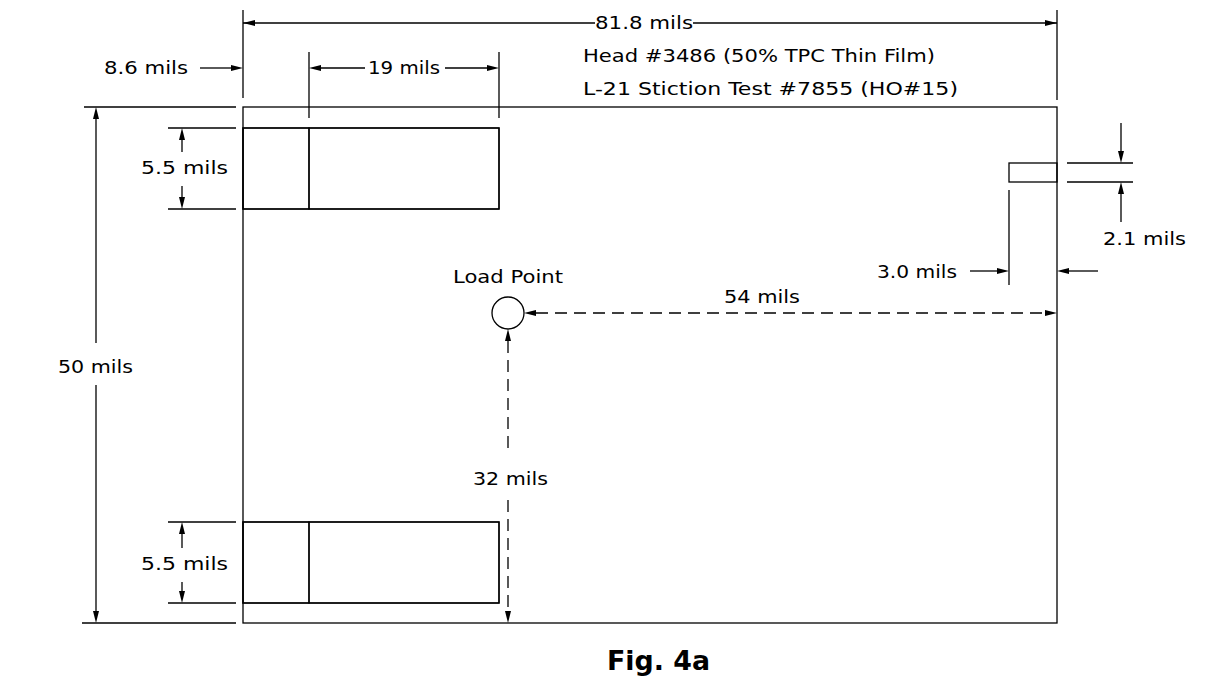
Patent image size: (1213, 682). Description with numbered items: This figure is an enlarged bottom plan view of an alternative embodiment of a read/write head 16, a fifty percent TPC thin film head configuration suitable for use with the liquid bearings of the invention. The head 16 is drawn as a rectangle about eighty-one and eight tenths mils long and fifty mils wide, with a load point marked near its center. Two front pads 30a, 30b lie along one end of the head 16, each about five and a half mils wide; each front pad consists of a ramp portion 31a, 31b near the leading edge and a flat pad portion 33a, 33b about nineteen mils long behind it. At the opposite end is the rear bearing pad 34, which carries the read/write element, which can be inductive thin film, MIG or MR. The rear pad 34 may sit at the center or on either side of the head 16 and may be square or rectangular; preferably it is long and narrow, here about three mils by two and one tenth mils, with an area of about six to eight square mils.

The read/write head 16 is at (1057, 462).
The front pad 30a is at (331, 402).
The front pad 30b is at (331, 529).
The ramp portion 31a is at (276, 168).
The ramp portion 31b is at (276, 562).
The flat pad portion 33a is at (404, 168).
The flat pad portion 33b is at (404, 562).
The rear bearing pad 34 is at (1036, 163).